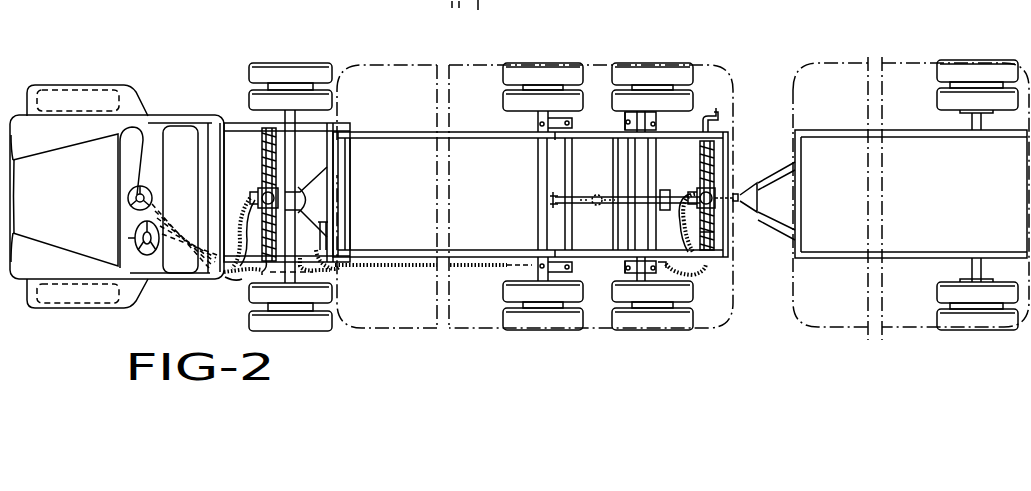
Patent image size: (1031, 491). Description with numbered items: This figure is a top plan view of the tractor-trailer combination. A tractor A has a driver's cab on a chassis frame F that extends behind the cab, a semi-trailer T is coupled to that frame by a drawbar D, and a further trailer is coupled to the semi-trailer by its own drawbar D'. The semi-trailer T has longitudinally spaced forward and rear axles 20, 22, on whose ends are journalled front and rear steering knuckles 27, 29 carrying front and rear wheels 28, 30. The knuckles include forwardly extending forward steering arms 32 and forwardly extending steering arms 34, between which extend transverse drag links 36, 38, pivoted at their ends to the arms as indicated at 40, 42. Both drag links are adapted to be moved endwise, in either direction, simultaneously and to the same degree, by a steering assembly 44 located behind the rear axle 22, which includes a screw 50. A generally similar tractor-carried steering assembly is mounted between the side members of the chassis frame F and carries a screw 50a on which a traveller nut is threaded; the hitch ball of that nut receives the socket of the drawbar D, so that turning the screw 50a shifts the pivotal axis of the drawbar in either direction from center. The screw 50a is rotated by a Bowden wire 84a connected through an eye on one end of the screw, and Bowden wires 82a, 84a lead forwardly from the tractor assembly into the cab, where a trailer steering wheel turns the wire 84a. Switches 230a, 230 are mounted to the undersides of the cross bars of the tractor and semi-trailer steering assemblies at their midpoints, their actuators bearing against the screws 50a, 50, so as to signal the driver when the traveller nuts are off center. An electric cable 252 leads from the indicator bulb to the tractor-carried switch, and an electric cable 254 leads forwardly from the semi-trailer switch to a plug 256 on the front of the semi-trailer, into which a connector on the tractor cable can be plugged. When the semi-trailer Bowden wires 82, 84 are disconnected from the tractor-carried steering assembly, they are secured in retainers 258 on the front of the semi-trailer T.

The tractor A is at (66, 78).
The chassis frame F is at (237, 114).
The semi-trailer T is at (490, 62).
The drawbar D is at (325, 202).
The drawbar D' is at (767, 208).
The forward axle 20 is at (538, 190).
The rear axle 22 is at (656, 176).
The front steering knuckle 27 is at (538, 115).
The front wheel 28 is at (546, 66).
The rear steering knuckle 29 is at (660, 119).
The rear wheel 30 is at (652, 67).
The forward steering arm 32 is at (557, 135).
The steering arm 34 is at (640, 117).
The drag link 36 is at (568, 173).
The drag link 38 is at (630, 157).
The pivot 40 is at (548, 125).
The pivot 42 is at (627, 122).
The steering assembly 44 is at (720, 172).
The screw 50 is at (712, 230).
The screw 50a is at (275, 157).
The Bowden wire 82 is at (338, 273).
The Bowden wire 82a is at (225, 276).
The Bowden wire 84 is at (397, 273).
The Bowden wire 84a is at (247, 285).
The switch 230 is at (712, 180).
The switch 230a is at (253, 193).
The electric cable 252 is at (243, 220).
The electric cable 254 is at (677, 223).
The plug 256 is at (317, 203).
The retainer 258 is at (320, 253).